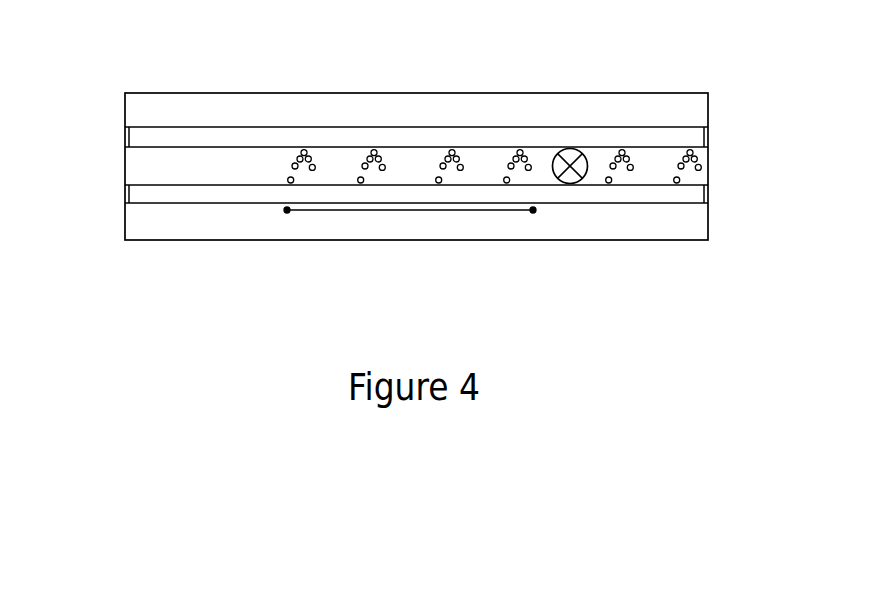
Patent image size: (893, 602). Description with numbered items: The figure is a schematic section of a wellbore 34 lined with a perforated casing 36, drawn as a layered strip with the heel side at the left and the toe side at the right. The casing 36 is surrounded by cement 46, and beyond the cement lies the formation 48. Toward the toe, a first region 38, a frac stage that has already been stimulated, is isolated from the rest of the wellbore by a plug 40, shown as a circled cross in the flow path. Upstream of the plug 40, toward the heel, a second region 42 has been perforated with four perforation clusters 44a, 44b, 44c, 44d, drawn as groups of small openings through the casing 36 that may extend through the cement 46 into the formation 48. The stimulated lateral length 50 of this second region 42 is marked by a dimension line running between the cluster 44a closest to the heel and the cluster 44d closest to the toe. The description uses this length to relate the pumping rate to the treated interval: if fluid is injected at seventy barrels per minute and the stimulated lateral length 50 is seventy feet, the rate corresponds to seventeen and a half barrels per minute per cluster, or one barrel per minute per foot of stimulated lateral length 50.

The wellbore 34 is at (102, 200).
The perforated casing 36 is at (183, 147).
The first region 38 is at (668, 147).
The plug 40 is at (575, 183).
The second region 42 is at (341, 147).
The perforation cluster 44a is at (304, 149).
The perforation cluster 44b is at (374, 149).
The perforation cluster 44c is at (452, 149).
The perforation cluster 44d is at (520, 149).
The cement 46 is at (266, 195).
The formation 48 is at (149, 108).
The stimulated lateral length 50 is at (313, 212).